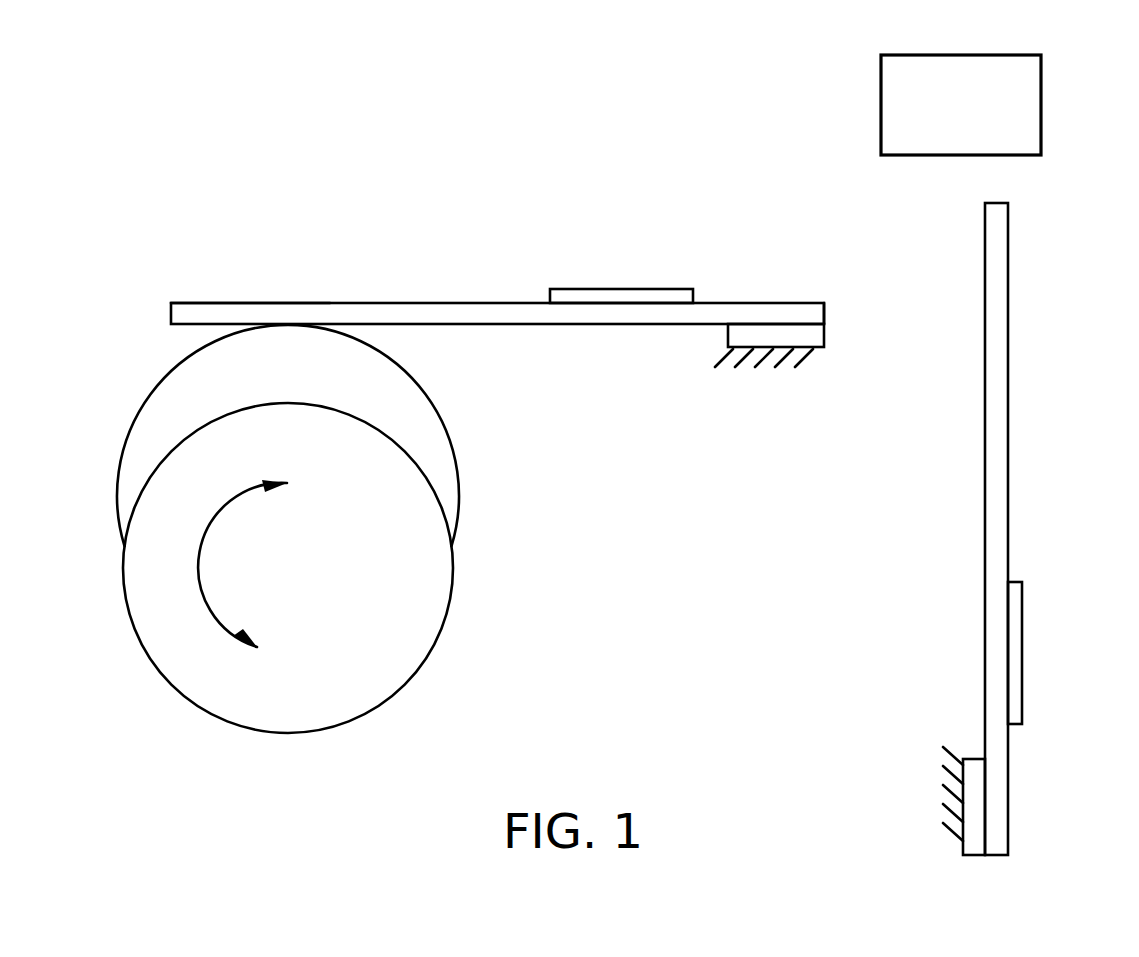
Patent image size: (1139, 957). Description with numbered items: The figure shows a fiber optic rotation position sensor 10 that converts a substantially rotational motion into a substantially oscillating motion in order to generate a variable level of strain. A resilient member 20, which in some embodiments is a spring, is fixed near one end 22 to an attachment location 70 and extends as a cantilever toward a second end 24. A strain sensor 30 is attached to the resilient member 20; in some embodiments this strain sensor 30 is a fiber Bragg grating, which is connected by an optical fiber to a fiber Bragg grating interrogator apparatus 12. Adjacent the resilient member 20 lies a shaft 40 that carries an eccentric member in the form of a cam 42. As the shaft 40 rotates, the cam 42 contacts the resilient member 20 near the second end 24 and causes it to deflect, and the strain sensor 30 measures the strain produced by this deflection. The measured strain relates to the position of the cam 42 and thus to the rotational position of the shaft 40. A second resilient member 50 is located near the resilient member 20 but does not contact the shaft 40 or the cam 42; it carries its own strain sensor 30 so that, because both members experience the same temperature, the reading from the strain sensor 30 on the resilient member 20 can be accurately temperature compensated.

The fiber optic rotation position sensor 10 is at (612, 156).
The fiber Bragg grating interrogator apparatus 12 is at (893, 105).
The resilient member 20 is at (310, 314).
The one end 22 is at (787, 308).
The second end 24 is at (207, 315).
The strain sensor 30 is at (635, 298).
The shaft 40 is at (417, 573).
The cam 42 is at (385, 400).
The resilient member 50 is at (1002, 402).
The attachment location 70 is at (768, 383).